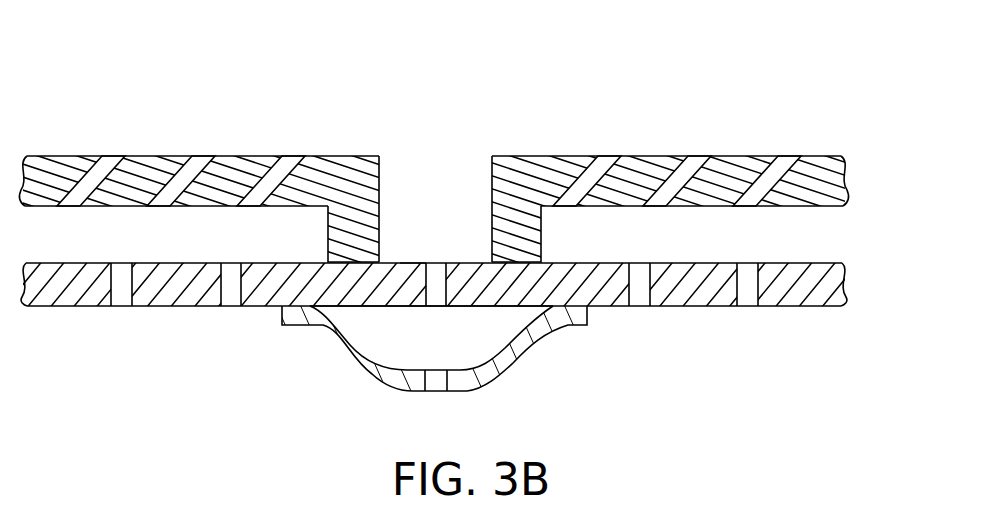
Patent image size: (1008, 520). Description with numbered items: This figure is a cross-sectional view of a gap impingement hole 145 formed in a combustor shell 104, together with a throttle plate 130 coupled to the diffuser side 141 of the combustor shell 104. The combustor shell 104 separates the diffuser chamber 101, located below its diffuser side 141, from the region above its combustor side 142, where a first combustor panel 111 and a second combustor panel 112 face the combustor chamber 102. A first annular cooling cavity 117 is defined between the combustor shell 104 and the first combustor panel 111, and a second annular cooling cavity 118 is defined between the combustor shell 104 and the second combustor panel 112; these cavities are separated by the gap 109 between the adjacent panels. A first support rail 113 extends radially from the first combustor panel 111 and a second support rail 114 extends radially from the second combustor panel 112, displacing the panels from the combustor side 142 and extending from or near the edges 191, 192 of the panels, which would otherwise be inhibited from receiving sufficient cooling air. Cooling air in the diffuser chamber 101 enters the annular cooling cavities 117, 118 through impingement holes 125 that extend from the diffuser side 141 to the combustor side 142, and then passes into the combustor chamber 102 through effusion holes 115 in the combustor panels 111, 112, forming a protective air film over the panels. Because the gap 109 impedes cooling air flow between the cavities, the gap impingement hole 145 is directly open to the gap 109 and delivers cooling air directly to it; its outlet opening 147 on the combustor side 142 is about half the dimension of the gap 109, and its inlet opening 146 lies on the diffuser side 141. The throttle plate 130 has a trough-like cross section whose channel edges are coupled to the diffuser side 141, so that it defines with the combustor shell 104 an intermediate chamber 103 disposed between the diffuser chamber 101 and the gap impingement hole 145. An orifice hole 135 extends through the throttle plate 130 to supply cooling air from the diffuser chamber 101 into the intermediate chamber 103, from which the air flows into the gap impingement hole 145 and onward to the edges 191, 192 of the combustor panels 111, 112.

The diffuser chamber 101 is at (451, 301).
The combustor chamber 102 is at (432, 260).
The intermediate chamber 103 is at (414, 346).
The combustor shell 104 is at (842, 287).
The gap 109 is at (440, 145).
The first combustor panel 111 is at (68, 167).
The second combustor panel 112 is at (661, 173).
The first support rail 113 is at (334, 241).
The second support rail 114 is at (520, 237).
The effusion holes 115 is at (121, 167).
The first annular cooling cavity 117 is at (89, 248).
The second annular cooling cavity 118 is at (690, 248).
The impingement holes 125 is at (232, 297).
The throttle plate 130 is at (452, 366).
The orifice hole 135 is at (437, 391).
The diffuser side 141 is at (793, 307).
The combustor side 142 is at (787, 263).
The gap impingement hole 145 is at (436, 273).
The inlet opening 146 is at (433, 306).
The outlet opening 147 is at (432, 262).
The edge of first combustor panel 191 is at (384, 171).
The edge of second combustor panel 192 is at (491, 168).